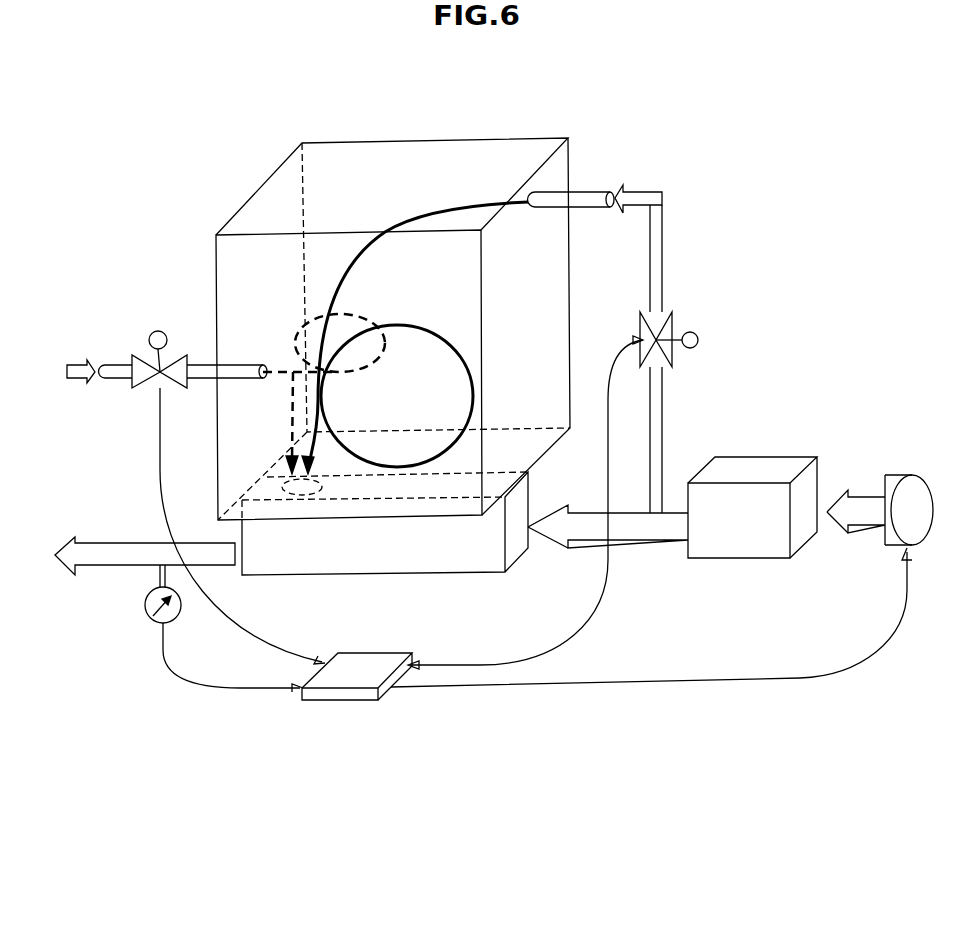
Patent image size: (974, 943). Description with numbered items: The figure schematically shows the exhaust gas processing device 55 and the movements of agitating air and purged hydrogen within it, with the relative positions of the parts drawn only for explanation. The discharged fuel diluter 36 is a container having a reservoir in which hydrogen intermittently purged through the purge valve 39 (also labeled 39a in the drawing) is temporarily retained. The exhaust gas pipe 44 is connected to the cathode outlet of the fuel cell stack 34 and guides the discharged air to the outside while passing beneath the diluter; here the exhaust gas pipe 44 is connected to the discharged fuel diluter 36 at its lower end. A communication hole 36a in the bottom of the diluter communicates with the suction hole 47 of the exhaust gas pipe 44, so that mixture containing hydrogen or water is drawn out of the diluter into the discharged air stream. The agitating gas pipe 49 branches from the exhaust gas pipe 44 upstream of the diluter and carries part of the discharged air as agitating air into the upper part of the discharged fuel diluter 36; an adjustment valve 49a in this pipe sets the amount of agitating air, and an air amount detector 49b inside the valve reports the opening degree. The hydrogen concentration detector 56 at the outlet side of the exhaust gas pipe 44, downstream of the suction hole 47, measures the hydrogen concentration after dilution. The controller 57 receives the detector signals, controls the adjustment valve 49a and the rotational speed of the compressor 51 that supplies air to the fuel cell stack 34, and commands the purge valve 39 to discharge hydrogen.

The exhaust gas processing device 55 is at (215, 153).
The discharged fuel diluter 36 is at (498, 147).
The communication hole 36a is at (305, 495).
The suction hole 47 is at (302, 487).
The exhaust gas pipe 44 is at (460, 568).
The agitating gas pipe 49 is at (585, 197).
The adjustment valve 49a is at (668, 320).
The air amount detector 49b is at (677, 340).
The purge valve 39 is at (150, 362).
The valve body 39a is at (159, 359).
The hydrogen concentration detector 56 is at (146, 615).
The controller 57 is at (333, 697).
The fuel cell stack 34 is at (783, 460).
The compressor 51 is at (900, 477).